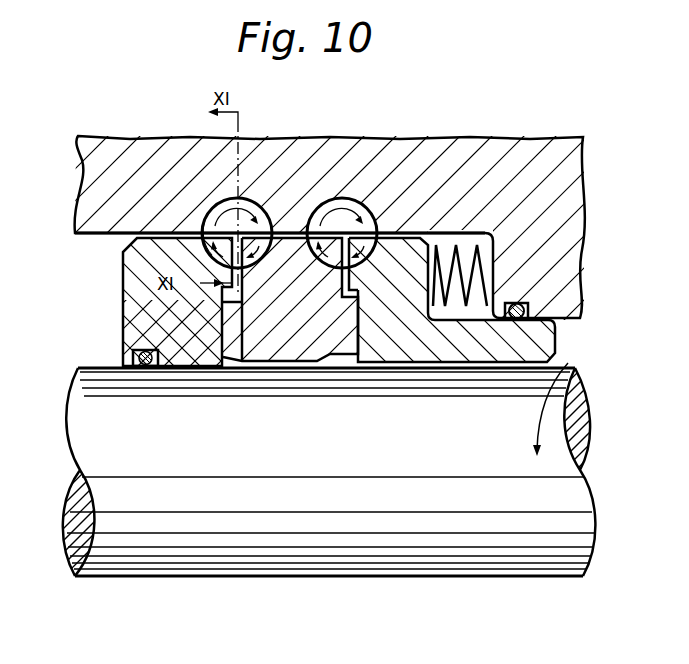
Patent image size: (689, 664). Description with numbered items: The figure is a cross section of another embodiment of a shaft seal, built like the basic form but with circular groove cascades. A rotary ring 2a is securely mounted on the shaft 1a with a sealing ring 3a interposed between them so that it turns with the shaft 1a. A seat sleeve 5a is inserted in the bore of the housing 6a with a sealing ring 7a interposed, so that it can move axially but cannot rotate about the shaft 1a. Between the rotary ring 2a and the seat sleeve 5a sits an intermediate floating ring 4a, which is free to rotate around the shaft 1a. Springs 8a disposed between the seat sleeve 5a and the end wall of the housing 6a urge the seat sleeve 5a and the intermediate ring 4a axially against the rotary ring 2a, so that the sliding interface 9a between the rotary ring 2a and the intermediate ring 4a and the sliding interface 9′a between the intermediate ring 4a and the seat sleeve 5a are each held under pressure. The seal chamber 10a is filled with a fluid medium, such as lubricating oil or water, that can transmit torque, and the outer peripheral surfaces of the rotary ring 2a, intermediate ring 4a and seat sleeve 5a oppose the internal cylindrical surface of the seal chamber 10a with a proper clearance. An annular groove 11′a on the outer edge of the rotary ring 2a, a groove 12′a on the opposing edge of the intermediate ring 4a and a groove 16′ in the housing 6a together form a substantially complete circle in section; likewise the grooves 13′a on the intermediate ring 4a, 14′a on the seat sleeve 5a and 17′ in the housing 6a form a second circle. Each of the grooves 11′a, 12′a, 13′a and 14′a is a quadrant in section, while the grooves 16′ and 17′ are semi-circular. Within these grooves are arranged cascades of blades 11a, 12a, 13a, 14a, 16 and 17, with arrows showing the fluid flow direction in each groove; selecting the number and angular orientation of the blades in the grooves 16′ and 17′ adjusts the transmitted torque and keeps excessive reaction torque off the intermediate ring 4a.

The shaft 1a is at (527, 563).
The rotary ring 2a is at (150, 370).
The sealing ring 3a is at (150, 350).
The intermediate floating ring 4a is at (273, 269).
The seat sleeve 5a is at (505, 350).
The housing 6a is at (83, 160).
The sealing ring 7a is at (533, 306).
The springs 8a is at (463, 253).
The sliding interface 9a is at (190, 368).
The sliding interface 9′a is at (360, 325).
The seal chamber 10a is at (87, 273).
The cascade of blades 11a is at (153, 368).
The annular groove 11′a is at (180, 368).
The cascade of blades 12a is at (253, 246).
The annular groove 12′a is at (237, 368).
The cascade of blades 13a is at (325, 279).
The annular groove 13′a is at (295, 269).
The cascade of blades 14a is at (452, 368).
The annular groove 14′a is at (425, 368).
The cascade of blades 16 is at (225, 205).
The groove 16′ is at (210, 216).
The cascade of blades 17 is at (333, 200).
The groove 17′ is at (371, 206).